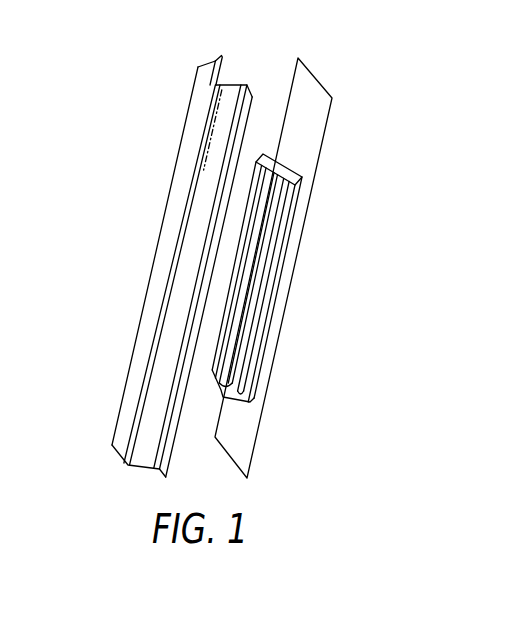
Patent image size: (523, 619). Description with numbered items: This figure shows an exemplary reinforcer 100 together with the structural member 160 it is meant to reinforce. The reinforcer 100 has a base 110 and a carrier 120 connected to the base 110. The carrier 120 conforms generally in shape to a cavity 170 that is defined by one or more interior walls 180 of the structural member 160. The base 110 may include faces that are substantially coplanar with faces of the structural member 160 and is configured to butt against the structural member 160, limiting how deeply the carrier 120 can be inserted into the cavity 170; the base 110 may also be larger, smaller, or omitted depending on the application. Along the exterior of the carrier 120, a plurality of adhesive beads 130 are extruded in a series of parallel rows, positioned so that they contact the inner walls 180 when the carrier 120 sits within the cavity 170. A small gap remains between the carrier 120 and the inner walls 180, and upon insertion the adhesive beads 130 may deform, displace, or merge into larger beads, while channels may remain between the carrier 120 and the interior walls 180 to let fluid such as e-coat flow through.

The reinforcer 100 is at (322, 62).
The base 110 is at (308, 108).
The carrier 120 is at (280, 167).
The adhesive beads 130 is at (228, 357).
The structural member 160 is at (167, 205).
The cavity 170 is at (233, 75).
The interior walls 180 is at (213, 77).